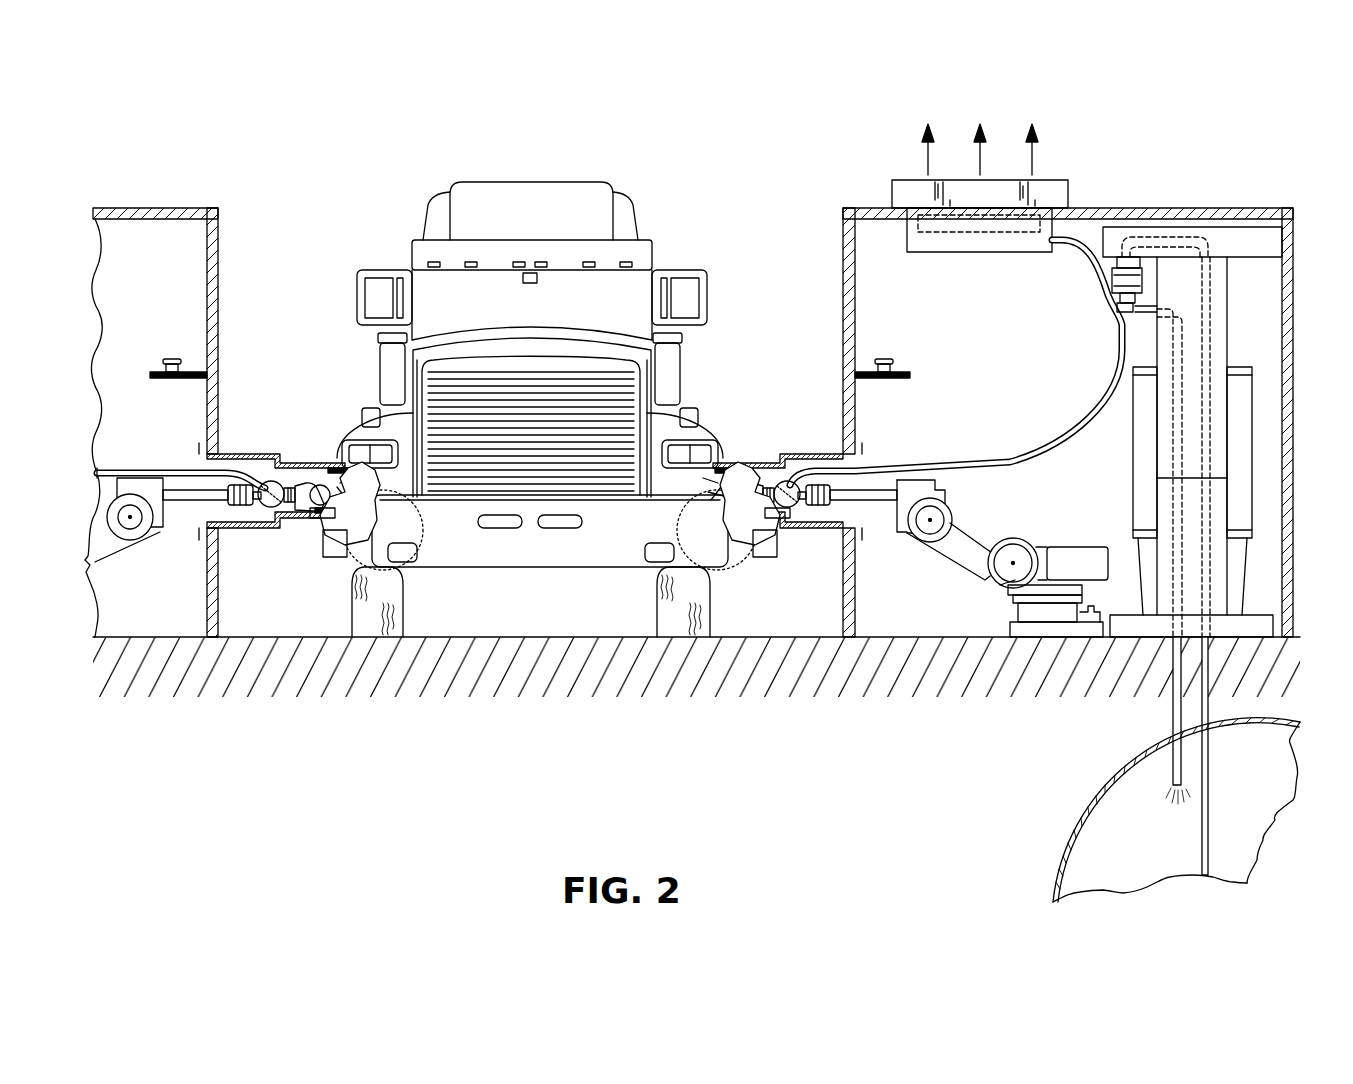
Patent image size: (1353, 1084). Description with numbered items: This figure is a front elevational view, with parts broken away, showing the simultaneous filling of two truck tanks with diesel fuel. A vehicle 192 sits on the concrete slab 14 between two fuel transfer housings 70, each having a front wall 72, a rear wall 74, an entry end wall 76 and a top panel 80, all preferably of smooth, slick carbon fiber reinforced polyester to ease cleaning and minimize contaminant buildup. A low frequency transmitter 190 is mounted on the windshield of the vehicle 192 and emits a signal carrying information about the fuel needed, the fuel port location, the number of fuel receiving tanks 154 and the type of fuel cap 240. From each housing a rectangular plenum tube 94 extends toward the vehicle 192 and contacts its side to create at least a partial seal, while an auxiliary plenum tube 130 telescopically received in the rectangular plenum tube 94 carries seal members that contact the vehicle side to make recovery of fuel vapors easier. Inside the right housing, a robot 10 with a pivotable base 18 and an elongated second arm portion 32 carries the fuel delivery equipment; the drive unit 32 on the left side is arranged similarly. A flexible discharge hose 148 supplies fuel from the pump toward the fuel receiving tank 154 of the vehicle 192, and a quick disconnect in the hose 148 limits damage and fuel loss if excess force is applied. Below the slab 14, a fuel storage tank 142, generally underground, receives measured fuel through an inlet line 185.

The robot 10 is at (905, 557).
The concrete slab 14 is at (275, 628).
The pivotable base 18 is at (1008, 617).
The elongated second arm portion 32 is at (190, 505).
The fuel transfer housing 70 is at (702, 417).
The front wall 72 is at (222, 240).
The rear wall 74 is at (1292, 318).
The entry end wall 76 is at (113, 622).
The top panel 80 is at (170, 207).
The rectangular plenum tube 94 is at (255, 454).
The auxiliary plenum tube 130 is at (521, 433).
The fuel storage tank 142 is at (1072, 843).
The flexible discharge hose 148 is at (150, 468).
The fuel receiving tank 154 is at (345, 568).
The inlet line 185 is at (1172, 731).
The low frequency transmitter 190 is at (535, 277).
The vehicle 192 is at (513, 182).
The fuel cap 240 is at (172, 357).